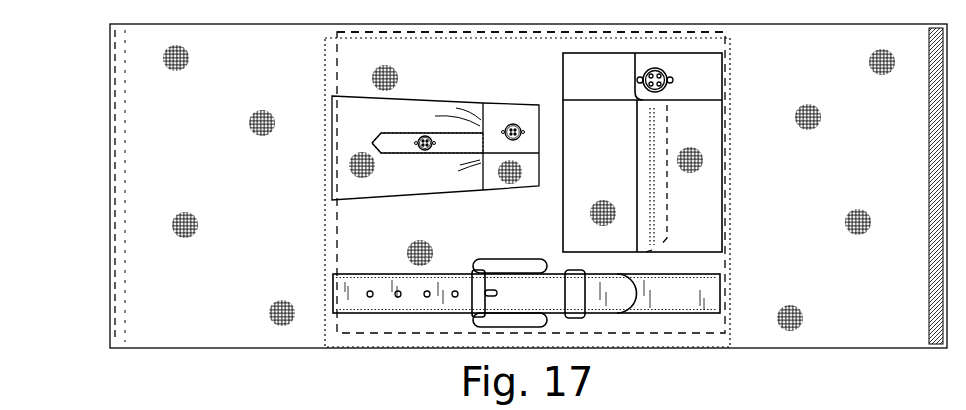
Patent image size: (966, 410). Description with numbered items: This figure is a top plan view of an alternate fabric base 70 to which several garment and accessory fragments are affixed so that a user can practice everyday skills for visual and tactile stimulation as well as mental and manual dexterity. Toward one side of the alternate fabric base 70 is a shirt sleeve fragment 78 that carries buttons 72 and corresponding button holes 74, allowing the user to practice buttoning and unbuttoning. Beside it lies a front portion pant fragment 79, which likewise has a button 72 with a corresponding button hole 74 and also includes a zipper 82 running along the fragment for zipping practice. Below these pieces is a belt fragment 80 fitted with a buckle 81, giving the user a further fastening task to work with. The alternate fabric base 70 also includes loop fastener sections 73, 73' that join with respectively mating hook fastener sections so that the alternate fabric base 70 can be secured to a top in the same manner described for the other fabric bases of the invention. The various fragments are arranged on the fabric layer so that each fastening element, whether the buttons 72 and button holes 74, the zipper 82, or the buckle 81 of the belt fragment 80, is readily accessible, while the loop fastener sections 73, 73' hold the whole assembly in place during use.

The alternate fabric base 70 is at (140, 82).
The buttons 72 is at (514, 123).
The loop fastener section 73 is at (527, 189).
The loop fastener section 73' is at (531, 57).
The button holes 74 is at (420, 140).
The shirt sleeve fragment 78 is at (437, 96).
The front portion pant fragment 79 is at (703, 142).
The belt fragment 80 is at (475, 259).
The buckle 81 is at (516, 263).
The zipper 82 is at (645, 162).